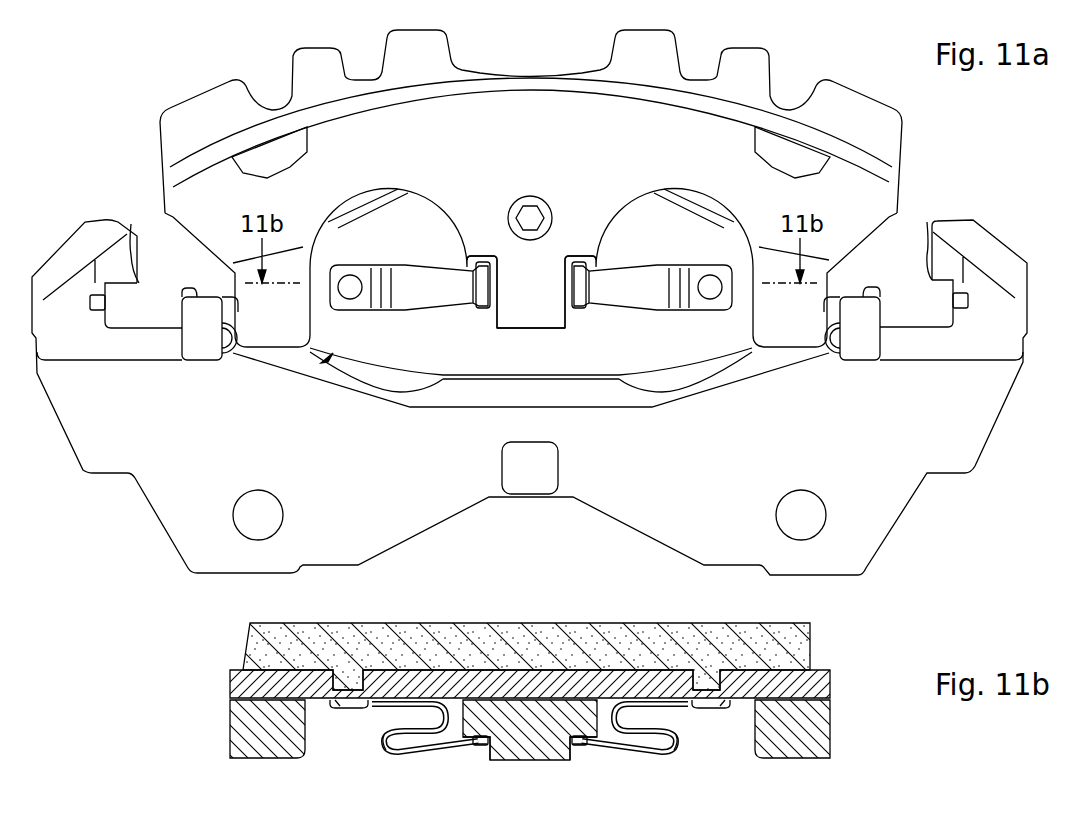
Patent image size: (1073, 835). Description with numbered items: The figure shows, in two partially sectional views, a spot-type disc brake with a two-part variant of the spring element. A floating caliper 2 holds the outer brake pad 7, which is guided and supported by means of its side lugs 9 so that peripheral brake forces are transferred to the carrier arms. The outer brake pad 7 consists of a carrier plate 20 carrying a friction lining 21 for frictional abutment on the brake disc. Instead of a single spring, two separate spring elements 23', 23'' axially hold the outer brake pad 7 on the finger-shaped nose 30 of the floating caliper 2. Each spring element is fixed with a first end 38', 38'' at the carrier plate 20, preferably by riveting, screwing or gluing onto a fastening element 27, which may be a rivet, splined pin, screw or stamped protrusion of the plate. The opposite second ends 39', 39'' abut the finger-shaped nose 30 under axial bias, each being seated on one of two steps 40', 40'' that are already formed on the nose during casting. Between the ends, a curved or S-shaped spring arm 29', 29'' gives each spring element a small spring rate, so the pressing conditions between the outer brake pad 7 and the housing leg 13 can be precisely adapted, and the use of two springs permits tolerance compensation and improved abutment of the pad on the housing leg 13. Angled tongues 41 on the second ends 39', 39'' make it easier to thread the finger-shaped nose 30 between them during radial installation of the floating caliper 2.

In FIG. 11A, the floating caliper 2 is at (289, 66).
In FIG. 11A, the outer brake pad 7 is at (313, 379).
In FIG. 11B, the outer brake pad 7 is at (455, 612).
In FIG. 11A, the lug 9 is at (151, 266).
In FIG. 11A, the housing leg 13 is at (580, 134).
In FIG. 11A, the carrier plate 20 is at (518, 361).
In FIG. 11B, the carrier plate 20 is at (568, 680).
In FIG. 11B, the friction lining 21 is at (496, 640).
In FIG. 11A, the spring element 23' is at (401, 355).
In FIG. 11B, the spring element 23' is at (425, 760).
In FIG. 11A, the spring element 23'' is at (660, 355).
In FIG. 11B, the spring element 23'' is at (643, 760).
In FIG. 11A, the fastening element 27 is at (370, 310).
In FIG. 11B, the fastening element 27 is at (347, 709).
In FIG. 11B, the spring arm 29' is at (373, 776).
In FIG. 11B, the spring arm 29'' is at (708, 776).
In FIG. 11A, the finger-shaped nose 30 is at (474, 230).
In FIG. 11B, the finger-shaped nose 30 is at (540, 725).
In FIG. 11A, the first end 38' is at (333, 355).
In FIG. 11B, the first end 38' is at (311, 758).
In FIG. 11A, the first end 38'' is at (742, 355).
In FIG. 11B, the first end 38'' is at (769, 758).
In FIG. 11A, the second end 39' is at (485, 355).
In FIG. 11B, the second end 39' is at (456, 776).
In FIG. 11A, the second end 39'' is at (575, 355).
In FIG. 11B, the second end 39'' is at (616, 776).
In FIG. 11A, the step 40' is at (448, 273).
In FIG. 11B, the step 40' is at (492, 777).
In FIG. 11A, the step 40'' is at (620, 273).
In FIG. 11B, the step 40'' is at (577, 777).
In FIG. 11A, the angled tongue 41 is at (478, 283).
In FIG. 11B, the angled tongue 41 is at (480, 748).